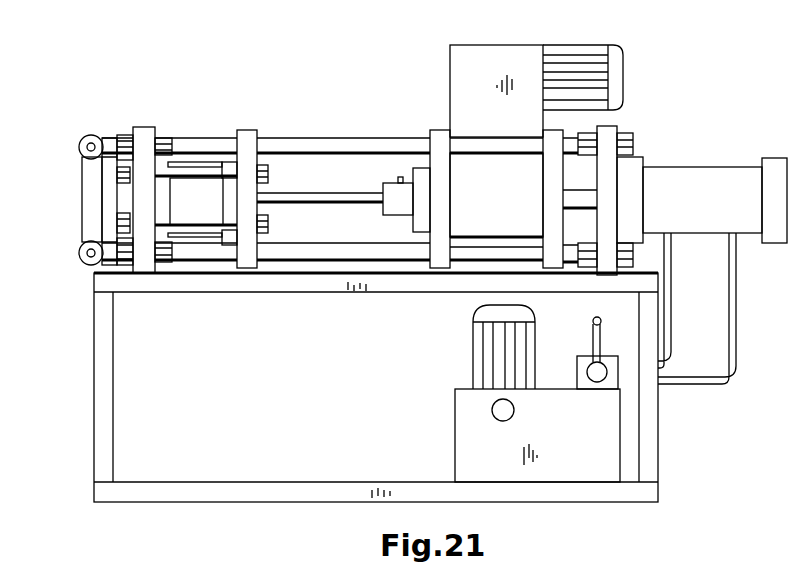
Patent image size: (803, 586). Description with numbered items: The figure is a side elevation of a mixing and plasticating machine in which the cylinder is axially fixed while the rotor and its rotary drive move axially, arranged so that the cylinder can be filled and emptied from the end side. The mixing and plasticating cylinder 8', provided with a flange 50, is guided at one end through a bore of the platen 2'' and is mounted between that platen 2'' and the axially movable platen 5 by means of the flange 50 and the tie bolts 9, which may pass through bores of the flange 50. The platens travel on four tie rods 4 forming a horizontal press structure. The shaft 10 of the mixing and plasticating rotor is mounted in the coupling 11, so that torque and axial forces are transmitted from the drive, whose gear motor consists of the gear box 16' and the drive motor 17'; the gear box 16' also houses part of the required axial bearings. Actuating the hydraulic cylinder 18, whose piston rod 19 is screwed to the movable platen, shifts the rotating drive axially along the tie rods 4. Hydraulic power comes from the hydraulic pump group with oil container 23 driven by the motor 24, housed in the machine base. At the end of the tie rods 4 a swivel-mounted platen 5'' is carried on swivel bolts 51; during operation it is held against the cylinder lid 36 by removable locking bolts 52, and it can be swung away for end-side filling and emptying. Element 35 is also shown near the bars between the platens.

The platen 2'' is at (136, 182).
The tie rods 4 is at (110, 148).
The axially movable platen 5 is at (254, 185).
The swivel-mounted platen 5'' is at (71, 199).
The mixing and plasticating cylinder 8' is at (213, 161).
The tie bolts 9 is at (197, 176).
The shaft of the mixing and plasticating rotor 10 is at (322, 200).
The coupling 11 is at (398, 197).
The gear box 16' is at (474, 141).
The drive motor 17' is at (601, 77).
The hydraulic cylinder 18 is at (693, 200).
The piston rod 19 is at (582, 202).
The hydraulic pump group with oil container 23 is at (560, 418).
The motor of the hydraulic pump group 24 is at (495, 380).
The bars 35 is at (230, 205).
The cylinder lid 36 is at (113, 208).
The flange 50 is at (160, 168).
The swivel bolts 51 is at (80, 141).
The removable locking bolts 52 is at (83, 262).